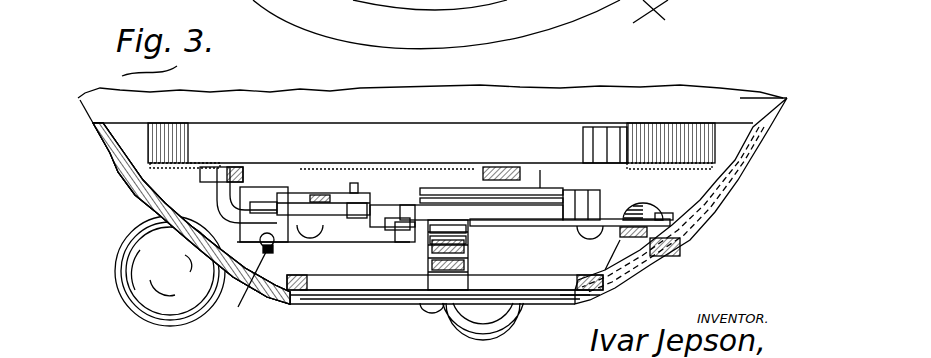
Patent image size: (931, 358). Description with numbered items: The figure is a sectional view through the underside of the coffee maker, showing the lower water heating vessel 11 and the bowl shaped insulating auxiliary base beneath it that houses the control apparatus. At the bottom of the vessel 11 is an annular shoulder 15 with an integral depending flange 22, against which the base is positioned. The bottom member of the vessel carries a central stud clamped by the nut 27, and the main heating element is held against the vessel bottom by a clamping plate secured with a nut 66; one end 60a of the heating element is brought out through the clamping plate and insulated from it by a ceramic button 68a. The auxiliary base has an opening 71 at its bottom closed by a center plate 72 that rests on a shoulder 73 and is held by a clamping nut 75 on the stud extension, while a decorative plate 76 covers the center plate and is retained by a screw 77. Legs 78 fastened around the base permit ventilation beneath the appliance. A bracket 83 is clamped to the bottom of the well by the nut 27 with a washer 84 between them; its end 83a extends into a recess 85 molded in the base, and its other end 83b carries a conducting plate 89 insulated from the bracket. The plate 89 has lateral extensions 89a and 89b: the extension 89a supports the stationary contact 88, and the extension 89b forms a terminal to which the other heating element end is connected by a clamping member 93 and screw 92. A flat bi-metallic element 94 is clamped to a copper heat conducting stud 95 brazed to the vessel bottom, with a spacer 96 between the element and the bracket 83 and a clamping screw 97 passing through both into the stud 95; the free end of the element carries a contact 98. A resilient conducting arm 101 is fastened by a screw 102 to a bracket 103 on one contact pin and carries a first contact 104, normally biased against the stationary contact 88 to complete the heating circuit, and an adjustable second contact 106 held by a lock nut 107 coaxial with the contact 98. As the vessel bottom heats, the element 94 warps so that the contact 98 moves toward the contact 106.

The lower water heating vessel 11 is at (763, 110).
The annular shoulder 15 is at (730, 127).
The depending flange 22 is at (147, 137).
The nut 27 is at (425, 185).
The heating element end 60a is at (215, 191).
The nut 66 is at (503, 167).
The ceramic button 68a is at (212, 166).
The opening 71 is at (312, 278).
The center plate 72 is at (493, 290).
The shoulder 73 is at (577, 297).
The clamping nut 75 is at (403, 276).
The decorative plate 76 is at (360, 300).
The screw 77 is at (427, 308).
The legs 78 is at (133, 252).
The bracket 83 is at (550, 227).
The bracket end 83a is at (673, 248).
The bracket end 83b is at (310, 197).
The washer 84 is at (402, 180).
The recess 85 is at (673, 207).
The stationary contact 88 is at (397, 232).
The conducting plate 89 is at (378, 203).
The lateral extension 89a is at (400, 228).
The lateral extension 89b is at (270, 245).
The screw 92 is at (318, 195).
The clamping member 93 is at (353, 182).
The bi-metallic element 94 is at (541, 200).
The stud 95 is at (593, 180).
The spacer 96 is at (574, 210).
The clamping screw 97 is at (607, 232).
The contact 98 is at (473, 210).
The conducting arm 101 is at (313, 240).
The screw 102 is at (245, 295).
The bracket 103 is at (258, 190).
The first contact 104 is at (427, 262).
The second contact 106 is at (467, 232).
The lock nut 107 is at (467, 243).